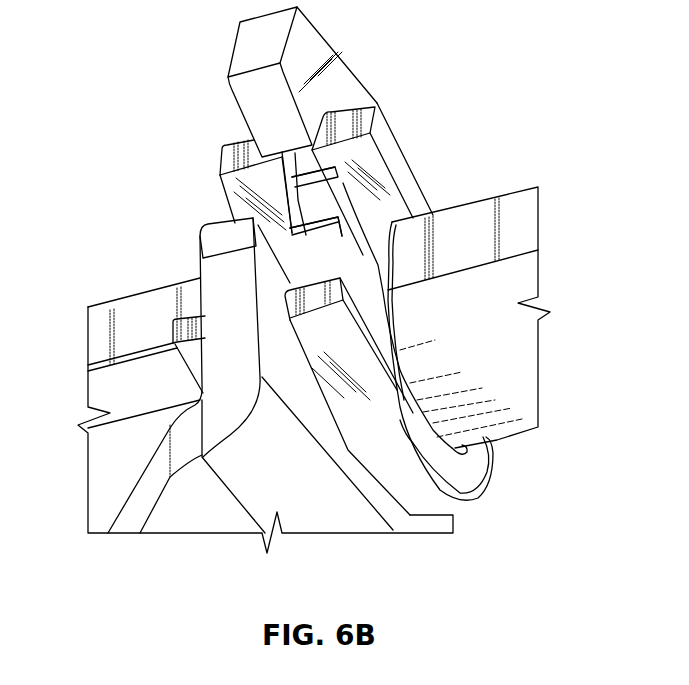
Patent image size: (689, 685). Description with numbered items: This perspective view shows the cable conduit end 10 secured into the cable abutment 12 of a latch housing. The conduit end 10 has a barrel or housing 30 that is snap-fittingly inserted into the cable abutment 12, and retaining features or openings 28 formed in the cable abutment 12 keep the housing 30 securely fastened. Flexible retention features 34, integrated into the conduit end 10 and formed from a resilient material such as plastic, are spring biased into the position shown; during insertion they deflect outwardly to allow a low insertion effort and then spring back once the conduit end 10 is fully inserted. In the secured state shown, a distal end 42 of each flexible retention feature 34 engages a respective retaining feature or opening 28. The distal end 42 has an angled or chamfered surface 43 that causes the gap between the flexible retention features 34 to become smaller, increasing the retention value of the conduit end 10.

The cable conduit end 10 is at (572, 66).
The cable abutment 12 is at (313, 45).
The retaining features 28 is at (262, 152).
The housing 30 is at (523, 280).
The flexible retention features 34 is at (223, 167).
The distal end 42 is at (267, 175).
The chamfered surface 43 is at (337, 225).